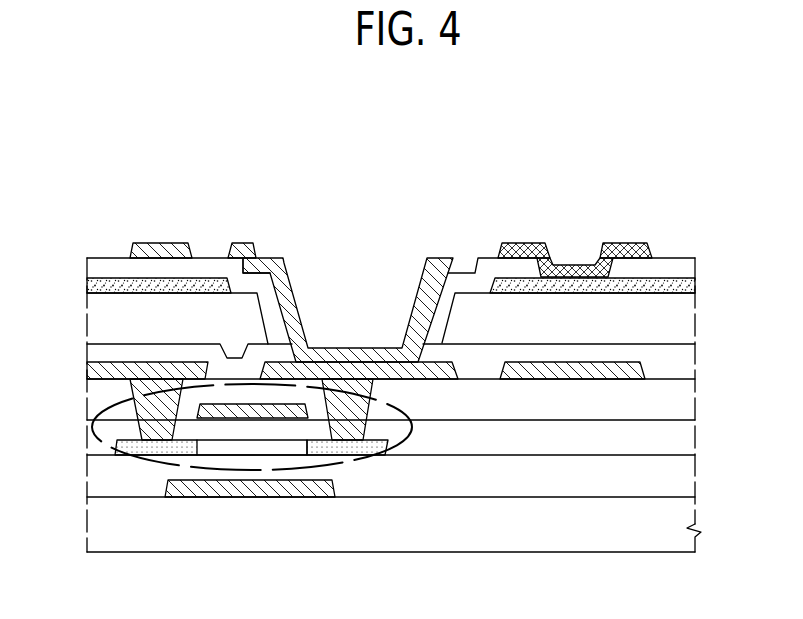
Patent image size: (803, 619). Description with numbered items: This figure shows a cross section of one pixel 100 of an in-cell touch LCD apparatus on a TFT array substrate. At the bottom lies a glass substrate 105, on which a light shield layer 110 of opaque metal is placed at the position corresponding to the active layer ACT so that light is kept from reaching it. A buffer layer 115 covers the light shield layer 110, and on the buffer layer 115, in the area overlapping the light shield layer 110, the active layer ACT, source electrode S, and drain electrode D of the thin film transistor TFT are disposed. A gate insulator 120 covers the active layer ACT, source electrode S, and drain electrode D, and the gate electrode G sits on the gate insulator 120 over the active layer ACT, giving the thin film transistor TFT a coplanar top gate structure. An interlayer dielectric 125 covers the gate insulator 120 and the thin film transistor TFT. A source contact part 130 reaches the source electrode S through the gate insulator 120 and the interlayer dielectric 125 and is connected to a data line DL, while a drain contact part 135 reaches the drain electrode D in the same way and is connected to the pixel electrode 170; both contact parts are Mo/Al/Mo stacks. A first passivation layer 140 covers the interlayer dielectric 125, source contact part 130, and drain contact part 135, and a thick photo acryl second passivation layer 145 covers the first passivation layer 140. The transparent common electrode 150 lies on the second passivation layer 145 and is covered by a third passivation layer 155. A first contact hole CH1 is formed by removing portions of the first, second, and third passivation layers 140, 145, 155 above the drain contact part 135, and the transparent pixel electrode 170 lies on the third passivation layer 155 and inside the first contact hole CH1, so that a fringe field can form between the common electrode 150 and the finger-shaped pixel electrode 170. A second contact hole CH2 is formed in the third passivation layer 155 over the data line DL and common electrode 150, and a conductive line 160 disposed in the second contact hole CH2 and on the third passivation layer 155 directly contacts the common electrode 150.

The display device 100 is at (373, 142).
The glass substrate 105 is at (685, 513).
The light shield layer 110 is at (250, 497).
The buffer layer 115 is at (685, 472).
The gate insulator 120 is at (685, 438).
The interlayer dielectric (ILD) 125 is at (685, 407).
The source contact part 130 is at (262, 481).
The drain contact part 135 is at (435, 380).
The first passivation layer (PAS0) 140 is at (685, 358).
The second passivation layer (PAS1) 145 is at (685, 320).
The common electrode 150 is at (87, 290).
The third passivation layer (PAS2) 155 is at (87, 268).
The conductive line 160 is at (575, 227).
The pixel electrode 170 is at (291, 273).
The source electrode S is at (142, 441).
The drain electrode D is at (367, 455).
The gate electrode G is at (232, 418).
The active layer ACT is at (282, 455).
The thin film transistor TFT is at (269, 490).
The data line DL is at (620, 370).
The first contact hole CH1 is at (356, 285).
The second contact hole CH2 is at (572, 257).